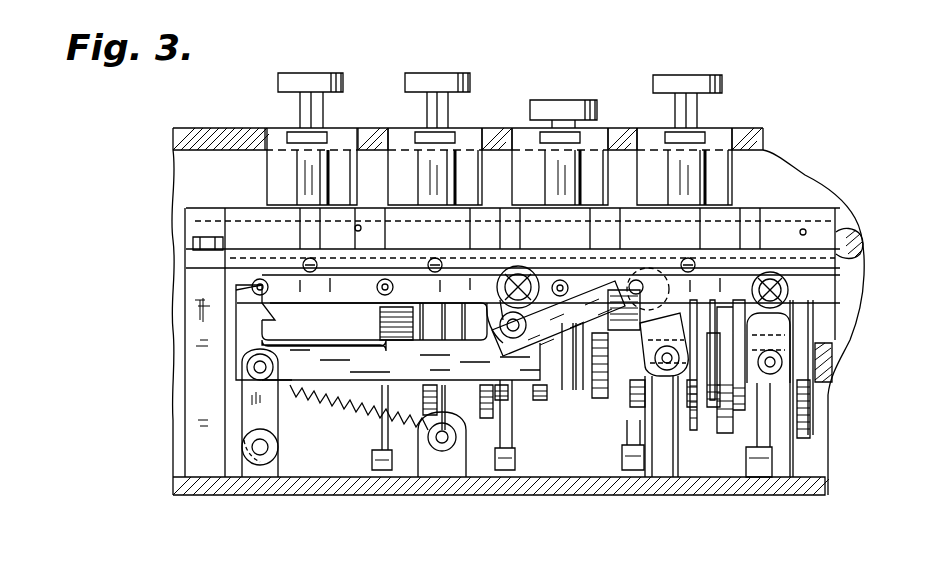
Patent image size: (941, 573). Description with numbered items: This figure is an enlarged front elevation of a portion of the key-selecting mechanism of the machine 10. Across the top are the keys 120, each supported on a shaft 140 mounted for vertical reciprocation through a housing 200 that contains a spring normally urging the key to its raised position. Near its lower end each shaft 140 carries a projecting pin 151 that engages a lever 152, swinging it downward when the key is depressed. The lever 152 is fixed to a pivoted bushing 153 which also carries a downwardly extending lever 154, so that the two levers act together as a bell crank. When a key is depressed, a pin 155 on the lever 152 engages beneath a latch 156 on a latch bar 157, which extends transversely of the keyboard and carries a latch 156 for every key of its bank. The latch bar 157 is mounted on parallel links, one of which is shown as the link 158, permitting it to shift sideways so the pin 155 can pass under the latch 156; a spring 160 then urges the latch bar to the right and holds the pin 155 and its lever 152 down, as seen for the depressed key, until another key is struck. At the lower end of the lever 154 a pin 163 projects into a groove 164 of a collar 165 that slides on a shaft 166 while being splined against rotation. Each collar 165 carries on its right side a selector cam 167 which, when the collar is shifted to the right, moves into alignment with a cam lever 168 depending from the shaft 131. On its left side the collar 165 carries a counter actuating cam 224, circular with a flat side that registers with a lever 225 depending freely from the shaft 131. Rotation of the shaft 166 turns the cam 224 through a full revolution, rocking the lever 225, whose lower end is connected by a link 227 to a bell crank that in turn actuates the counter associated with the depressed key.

The frame body 10 is at (764, 118).
The key 120 is at (414, 74).
The shaft 140 is at (427, 100).
The housing 200 is at (268, 166).
The shaft 131 is at (862, 228).
The projecting pin 151 is at (306, 260).
The pin 155 is at (262, 278).
The pivoted bushing 153 is at (500, 276).
The lever 152 is at (736, 262).
The latch bar 157 is at (388, 332).
The latch 156 is at (372, 312).
The lever 154 is at (380, 330).
The cam lever 168 is at (548, 340).
The pin 163 is at (660, 378).
The cam 167 is at (545, 383).
The groove 164 is at (856, 432).
The collar 165 is at (856, 448).
The shaft 166 is at (835, 372).
The counter actuating cam 224 is at (482, 403).
The lever 225 is at (380, 433).
The parallel link 158 is at (266, 414).
The spring 160 is at (280, 441).
The link 227 is at (495, 470).